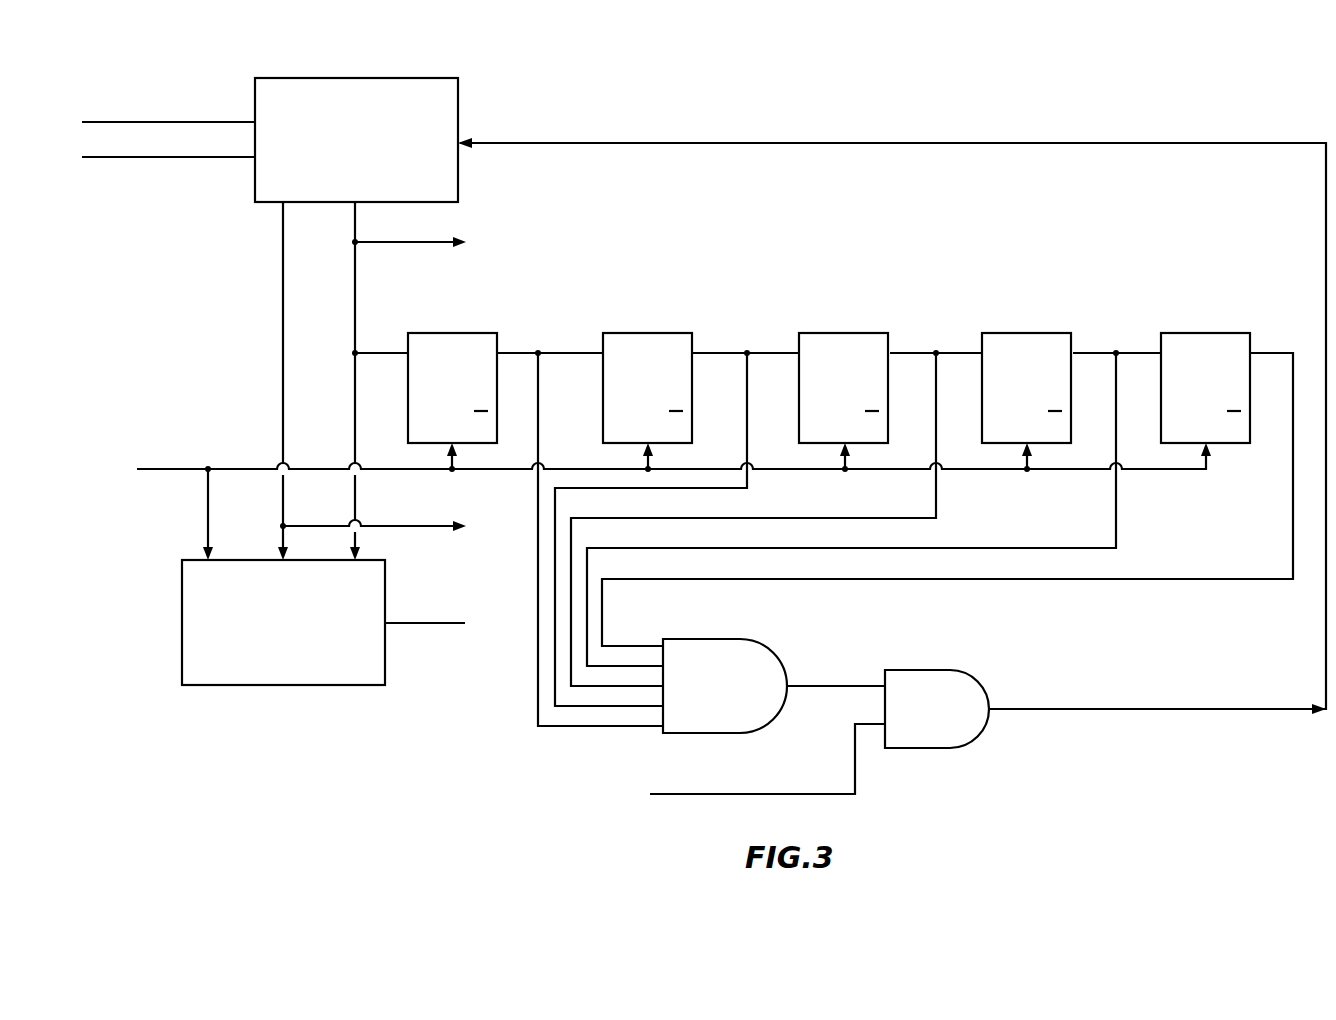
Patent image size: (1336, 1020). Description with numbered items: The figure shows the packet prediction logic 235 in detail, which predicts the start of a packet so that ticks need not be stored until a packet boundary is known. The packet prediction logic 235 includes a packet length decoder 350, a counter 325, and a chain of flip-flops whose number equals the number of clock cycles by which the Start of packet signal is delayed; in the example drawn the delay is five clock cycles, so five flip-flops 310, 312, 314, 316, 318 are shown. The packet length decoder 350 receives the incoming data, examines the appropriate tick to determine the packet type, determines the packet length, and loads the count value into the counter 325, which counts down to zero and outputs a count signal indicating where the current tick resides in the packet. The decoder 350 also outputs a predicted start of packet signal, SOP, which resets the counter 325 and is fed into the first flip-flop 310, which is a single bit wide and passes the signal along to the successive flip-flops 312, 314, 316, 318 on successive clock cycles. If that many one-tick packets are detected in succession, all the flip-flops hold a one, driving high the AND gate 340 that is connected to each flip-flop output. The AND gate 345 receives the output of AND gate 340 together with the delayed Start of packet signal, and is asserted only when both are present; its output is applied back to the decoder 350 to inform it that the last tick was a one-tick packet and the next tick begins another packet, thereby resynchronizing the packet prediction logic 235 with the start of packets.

The packet prediction logic 235 is at (817, 64).
The packet length decoder 350 is at (458, 105).
The first flip-flop 310 is at (462, 333).
The flip-flop 312 is at (650, 333).
The flip-flop 314 is at (860, 333).
The flip-flop 316 is at (1020, 333).
The flip-flop 318 is at (1190, 333).
The AND gate 340 is at (768, 650).
The AND gate 345 is at (972, 670).
The counter 325 is at (208, 688).